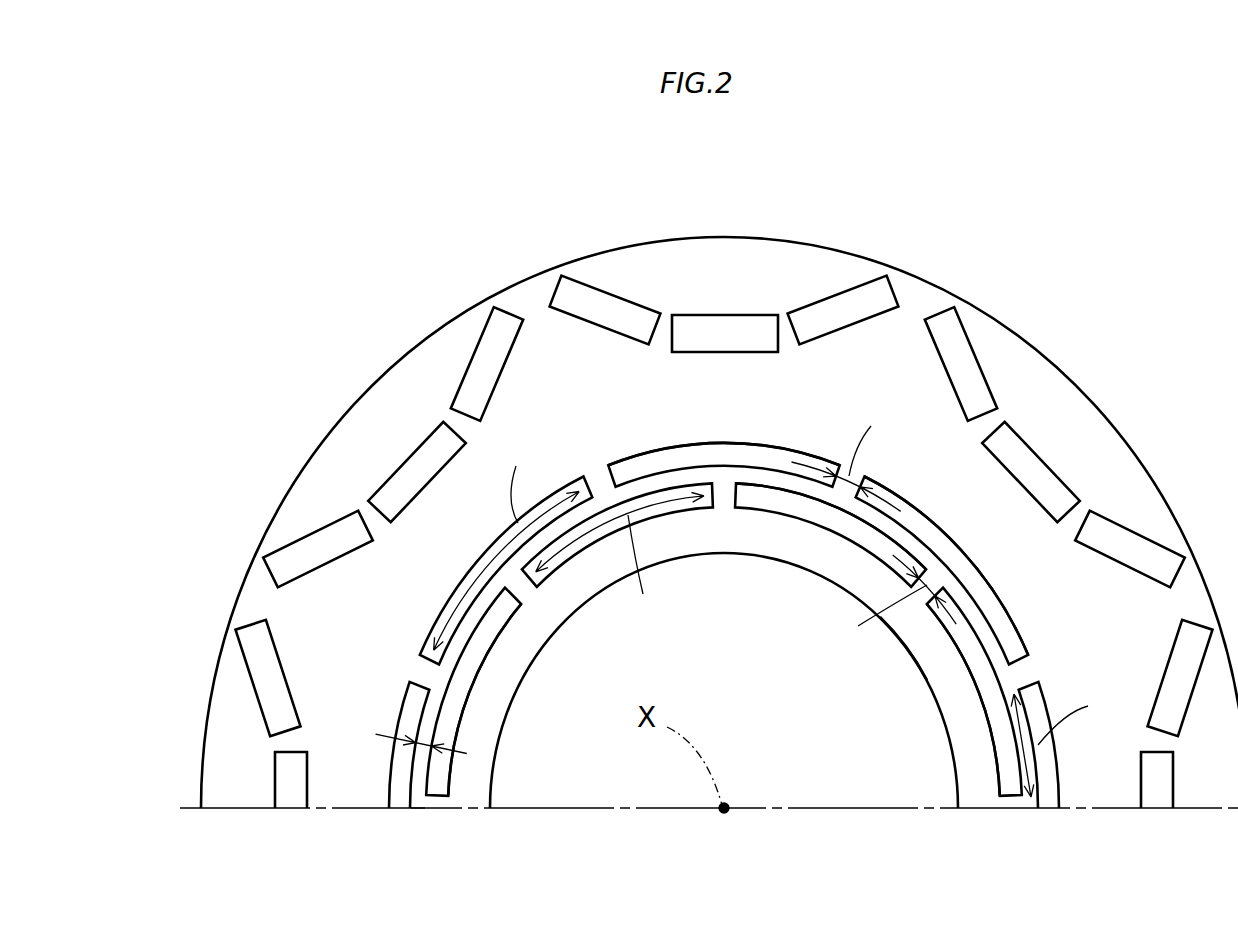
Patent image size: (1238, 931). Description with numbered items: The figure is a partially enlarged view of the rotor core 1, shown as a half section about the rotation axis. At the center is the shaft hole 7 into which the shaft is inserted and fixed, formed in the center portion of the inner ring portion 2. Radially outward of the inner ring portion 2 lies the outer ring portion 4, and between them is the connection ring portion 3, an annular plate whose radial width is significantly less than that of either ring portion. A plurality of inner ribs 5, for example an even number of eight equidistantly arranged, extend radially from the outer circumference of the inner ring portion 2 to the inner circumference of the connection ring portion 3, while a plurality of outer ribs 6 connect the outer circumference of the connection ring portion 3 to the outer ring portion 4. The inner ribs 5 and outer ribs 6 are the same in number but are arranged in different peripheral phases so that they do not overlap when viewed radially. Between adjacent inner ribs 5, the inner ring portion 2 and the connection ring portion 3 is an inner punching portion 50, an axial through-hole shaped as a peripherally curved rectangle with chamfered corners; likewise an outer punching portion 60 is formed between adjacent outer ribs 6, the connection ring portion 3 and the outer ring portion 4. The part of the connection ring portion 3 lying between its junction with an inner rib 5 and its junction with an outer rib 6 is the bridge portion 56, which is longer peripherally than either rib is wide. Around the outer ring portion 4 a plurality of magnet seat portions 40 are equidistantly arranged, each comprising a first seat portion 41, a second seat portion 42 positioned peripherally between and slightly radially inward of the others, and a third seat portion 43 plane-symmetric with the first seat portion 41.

The rotor core 1 is at (227, 592).
The inner ring portion 2 is at (787, 540).
The connection ring portion 3 is at (420, 772).
The outer ring portion 4 is at (905, 337).
The magnet seat portion 40 is at (724, 542).
The first seat portion 41 is at (308, 505).
The second seat portion 42 is at (407, 443).
The third seat portion 43 is at (476, 336).
The inner rib 5 is at (520, 587).
The inner punching portion 50 is at (473, 659).
The bridge portion 56 is at (783, 482).
The outer rib 6 is at (610, 468).
The outer punching portion 60 is at (747, 437).
The shaft hole 7 is at (905, 665).